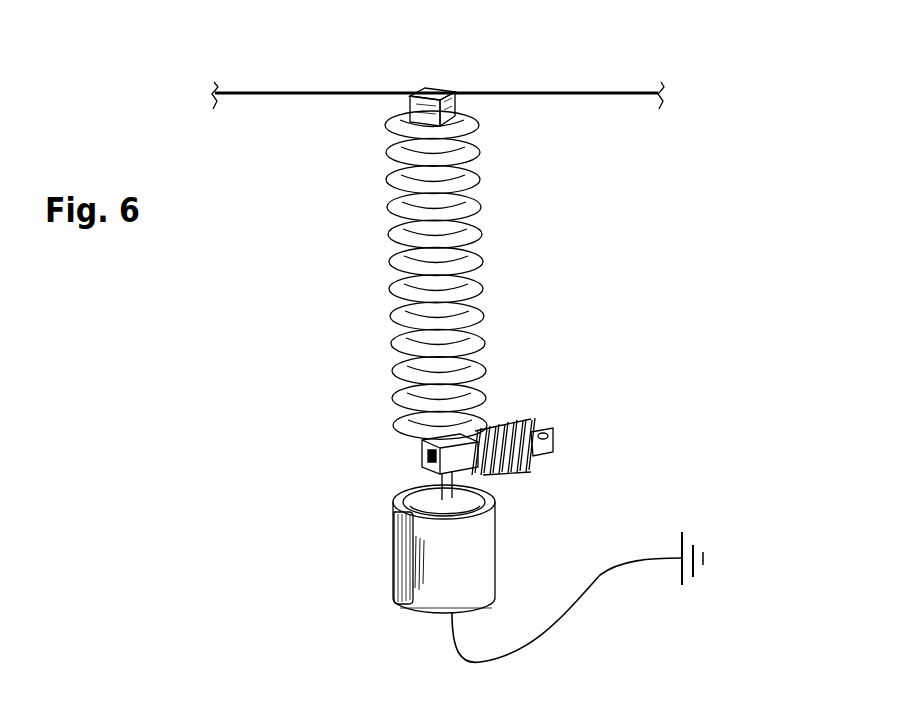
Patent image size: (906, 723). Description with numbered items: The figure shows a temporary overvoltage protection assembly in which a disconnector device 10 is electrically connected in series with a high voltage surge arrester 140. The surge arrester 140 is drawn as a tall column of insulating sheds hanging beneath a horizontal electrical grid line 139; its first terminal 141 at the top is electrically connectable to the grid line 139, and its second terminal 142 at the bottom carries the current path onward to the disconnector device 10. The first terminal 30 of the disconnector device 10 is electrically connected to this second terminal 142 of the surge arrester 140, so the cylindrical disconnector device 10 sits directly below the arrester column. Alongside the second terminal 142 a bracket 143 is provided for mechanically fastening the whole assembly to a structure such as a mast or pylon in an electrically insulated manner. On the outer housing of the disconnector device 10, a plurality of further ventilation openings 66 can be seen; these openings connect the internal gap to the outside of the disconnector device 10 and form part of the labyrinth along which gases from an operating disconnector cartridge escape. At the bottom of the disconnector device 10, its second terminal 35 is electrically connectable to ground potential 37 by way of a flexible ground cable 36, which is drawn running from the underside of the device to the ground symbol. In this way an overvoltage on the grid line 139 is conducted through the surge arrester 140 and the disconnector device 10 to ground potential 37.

The electrical grid line 139 is at (617, 92).
The first terminal of the surge arrester 141 is at (476, 111).
The high voltage surge arrester 140 is at (447, 210).
The second terminal of the surge arrester 142 is at (425, 448).
The bracket 143 is at (536, 481).
The disconnector device 10 is at (446, 568).
The first terminal of the disconnector device 30 is at (428, 490).
The further ventilation openings 66 is at (400, 545).
The second terminal of the disconnector device 35 is at (434, 620).
The flexible ground cable 36 is at (601, 602).
The ground potential 37 is at (709, 547).